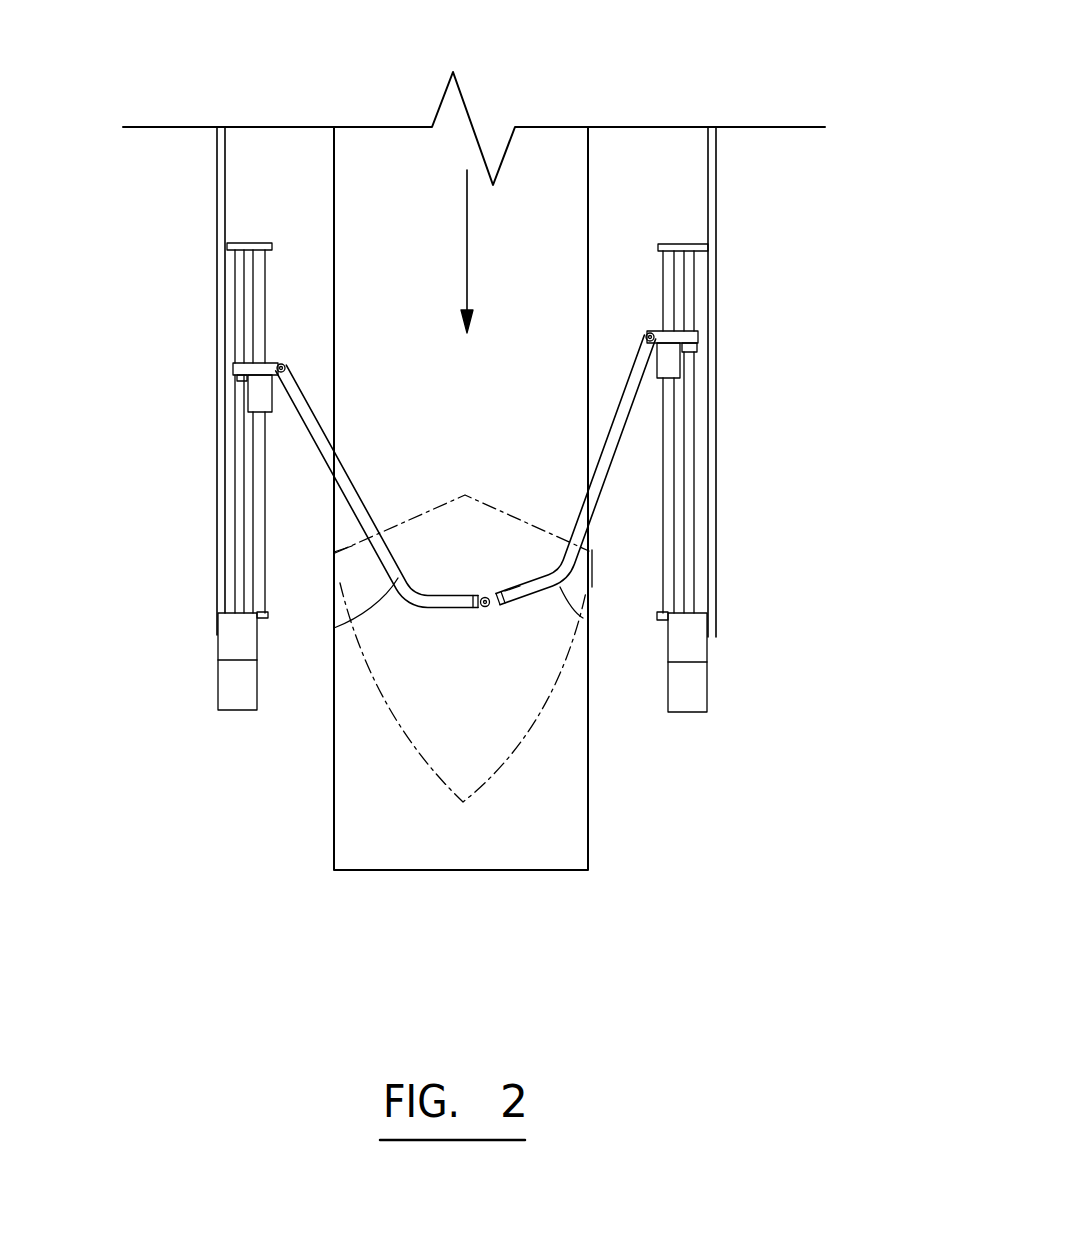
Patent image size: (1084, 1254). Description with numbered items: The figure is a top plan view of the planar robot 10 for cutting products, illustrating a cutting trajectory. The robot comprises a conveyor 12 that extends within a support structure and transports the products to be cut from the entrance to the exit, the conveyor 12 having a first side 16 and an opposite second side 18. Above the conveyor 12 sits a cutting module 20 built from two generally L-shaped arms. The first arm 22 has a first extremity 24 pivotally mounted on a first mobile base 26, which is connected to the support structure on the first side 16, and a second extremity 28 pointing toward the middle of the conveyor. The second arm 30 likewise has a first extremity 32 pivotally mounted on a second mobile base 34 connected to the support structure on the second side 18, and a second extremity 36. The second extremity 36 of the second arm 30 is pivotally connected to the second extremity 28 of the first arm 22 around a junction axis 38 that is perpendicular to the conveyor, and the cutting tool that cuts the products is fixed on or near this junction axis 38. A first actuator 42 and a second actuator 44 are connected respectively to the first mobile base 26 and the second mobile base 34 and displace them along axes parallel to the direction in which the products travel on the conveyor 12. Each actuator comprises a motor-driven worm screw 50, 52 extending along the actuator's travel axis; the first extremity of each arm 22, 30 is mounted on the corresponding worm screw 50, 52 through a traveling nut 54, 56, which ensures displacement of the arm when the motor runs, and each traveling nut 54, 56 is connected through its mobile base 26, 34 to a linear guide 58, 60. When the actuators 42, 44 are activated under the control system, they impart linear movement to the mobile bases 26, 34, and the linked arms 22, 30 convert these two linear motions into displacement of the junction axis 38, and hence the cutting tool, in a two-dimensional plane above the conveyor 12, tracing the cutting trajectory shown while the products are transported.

The planar robot 10 is at (872, 551).
The conveyor 12 is at (537, 165).
The first side 16 is at (337, 168).
The second side 18 is at (592, 196).
The cutting module 20 is at (132, 443).
The first generally L-shaped arm 22 is at (396, 588).
The first extremity of the first arm 24 is at (288, 363).
The first mobile base 26 is at (233, 370).
The second extremity of the first arm 28 is at (485, 698).
The second generally L-shaped arm 30 is at (588, 622).
The first extremity of the second arm 32 is at (650, 334).
The second mobile base 34 is at (693, 333).
The second extremity of the second arm 36 is at (513, 606).
The junction axis 38 is at (482, 608).
The first actuator 42 is at (228, 690).
The second actuator 44 is at (683, 690).
The worm screw 50 is at (238, 550).
The worm screw 52 is at (690, 560).
The traveling nut 54 is at (240, 383).
The traveling nut 56 is at (690, 350).
The linear guide 58 is at (258, 485).
The linear guide 60 is at (665, 513).